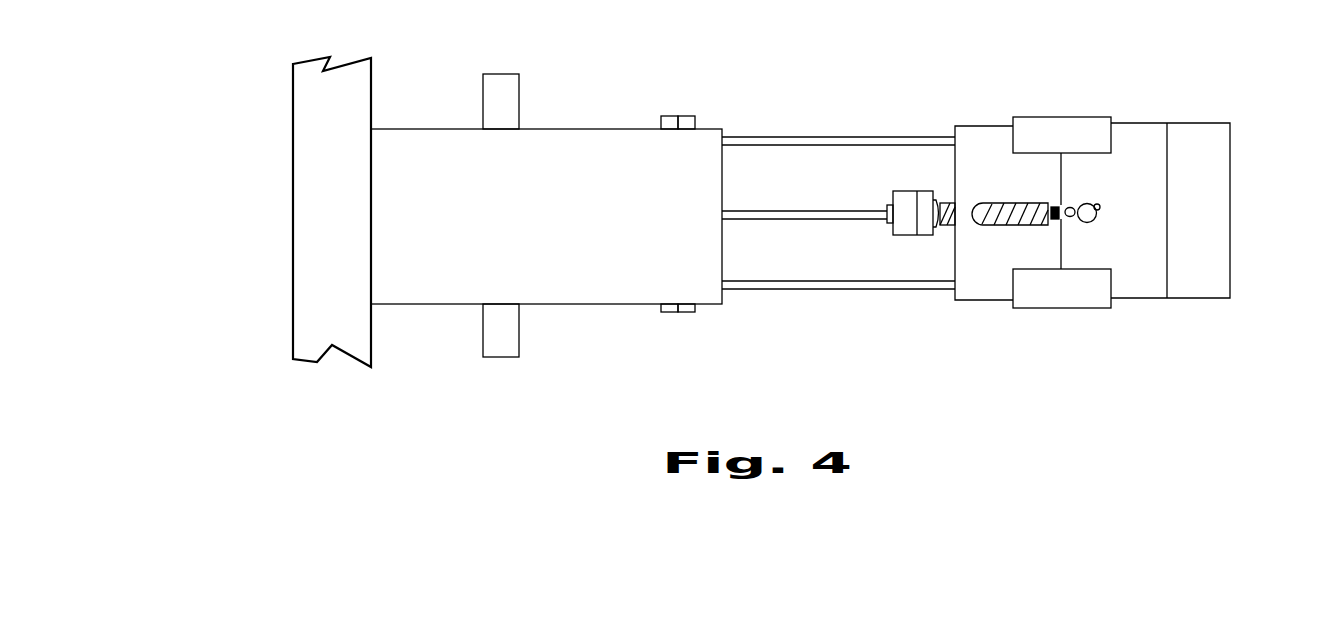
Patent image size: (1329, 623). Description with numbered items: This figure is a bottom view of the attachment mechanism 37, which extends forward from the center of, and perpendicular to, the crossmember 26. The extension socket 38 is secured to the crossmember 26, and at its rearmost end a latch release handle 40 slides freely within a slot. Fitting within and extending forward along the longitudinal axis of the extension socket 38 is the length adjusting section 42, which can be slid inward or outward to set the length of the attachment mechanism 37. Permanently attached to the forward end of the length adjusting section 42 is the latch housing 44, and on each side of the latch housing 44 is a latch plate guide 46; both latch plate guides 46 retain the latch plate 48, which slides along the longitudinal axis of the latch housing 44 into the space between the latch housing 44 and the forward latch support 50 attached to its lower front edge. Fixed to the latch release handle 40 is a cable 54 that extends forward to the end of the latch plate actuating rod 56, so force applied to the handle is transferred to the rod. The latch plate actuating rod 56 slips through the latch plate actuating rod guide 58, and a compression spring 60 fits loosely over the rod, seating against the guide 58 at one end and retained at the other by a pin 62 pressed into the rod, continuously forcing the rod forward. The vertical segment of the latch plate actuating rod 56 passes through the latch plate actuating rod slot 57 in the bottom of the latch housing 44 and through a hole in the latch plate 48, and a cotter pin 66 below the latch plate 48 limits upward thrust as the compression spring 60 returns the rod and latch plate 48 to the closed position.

The crossmember 26 is at (329, 227).
The attachment mechanism 37 is at (773, 133).
The extension socket 38 is at (623, 278).
The latch release handle 40 is at (513, 98).
The length adjusting section 42 is at (840, 138).
The latch housing 44 is at (973, 138).
The latch plate guide 46 is at (1052, 132).
The latch plate 48 is at (1138, 287).
The forward latch support 50 is at (1202, 283).
The cable 54 is at (798, 217).
The latch plate actuating rod 56 is at (905, 213).
The latch plate actuating rod slot 57 is at (1010, 117).
The latch plate actuating rod guide 58 is at (908, 195).
The compression spring 60 is at (969, 313).
The pin 62 is at (1060, 219).
The cotter pin 66 is at (1179, 202).